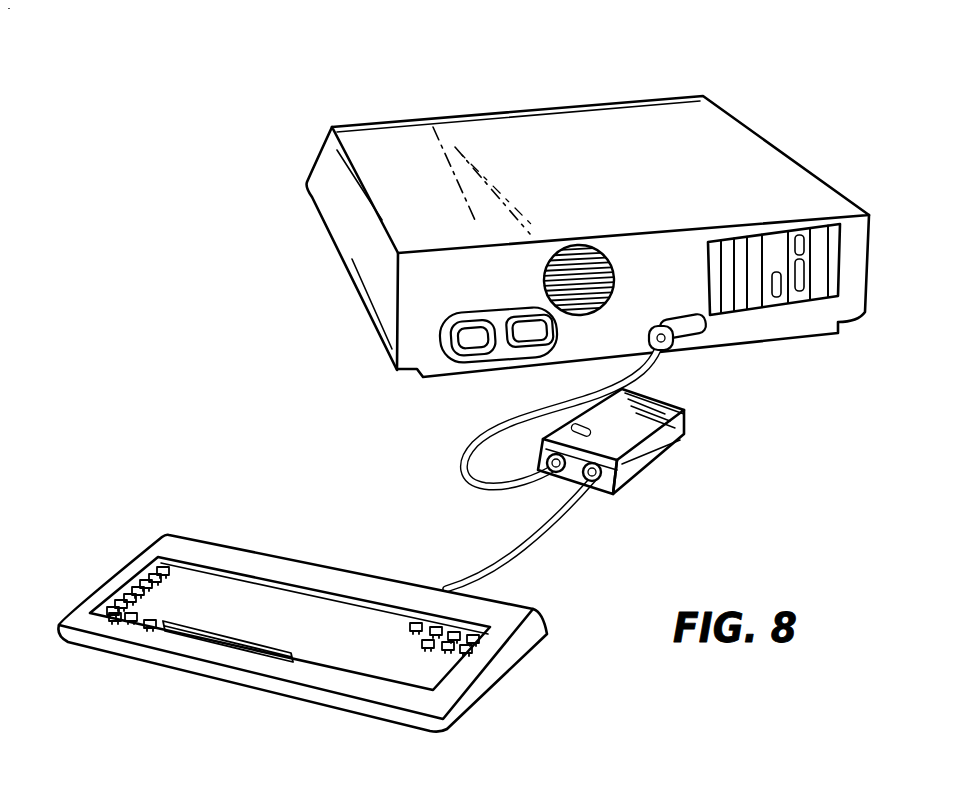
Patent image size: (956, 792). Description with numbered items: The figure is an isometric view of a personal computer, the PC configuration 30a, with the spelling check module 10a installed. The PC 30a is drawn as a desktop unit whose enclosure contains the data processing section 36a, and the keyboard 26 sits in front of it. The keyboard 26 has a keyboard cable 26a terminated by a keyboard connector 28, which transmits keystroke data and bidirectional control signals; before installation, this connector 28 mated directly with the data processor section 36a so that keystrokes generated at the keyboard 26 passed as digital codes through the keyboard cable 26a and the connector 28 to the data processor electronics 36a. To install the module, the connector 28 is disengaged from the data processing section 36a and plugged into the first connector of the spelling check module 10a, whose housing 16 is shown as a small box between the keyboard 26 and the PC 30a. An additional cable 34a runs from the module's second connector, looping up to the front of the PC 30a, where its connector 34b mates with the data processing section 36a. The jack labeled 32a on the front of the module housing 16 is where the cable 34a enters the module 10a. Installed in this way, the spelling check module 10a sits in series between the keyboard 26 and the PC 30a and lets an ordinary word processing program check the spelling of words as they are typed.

The PC configuration 30a is at (578, 98).
The data processing section 36a is at (780, 162).
The additional cable 34a is at (487, 430).
The connector 34b is at (687, 345).
The spelling check module 10a is at (644, 448).
The housing 16 is at (643, 430).
The input jack 32a is at (558, 478).
The keyboard connector 28 is at (587, 497).
The keyboard cable 26a is at (532, 545).
The keyboard 26 is at (118, 578).